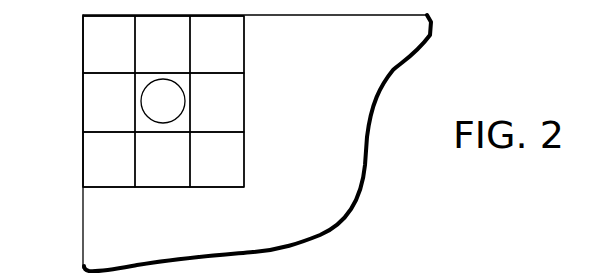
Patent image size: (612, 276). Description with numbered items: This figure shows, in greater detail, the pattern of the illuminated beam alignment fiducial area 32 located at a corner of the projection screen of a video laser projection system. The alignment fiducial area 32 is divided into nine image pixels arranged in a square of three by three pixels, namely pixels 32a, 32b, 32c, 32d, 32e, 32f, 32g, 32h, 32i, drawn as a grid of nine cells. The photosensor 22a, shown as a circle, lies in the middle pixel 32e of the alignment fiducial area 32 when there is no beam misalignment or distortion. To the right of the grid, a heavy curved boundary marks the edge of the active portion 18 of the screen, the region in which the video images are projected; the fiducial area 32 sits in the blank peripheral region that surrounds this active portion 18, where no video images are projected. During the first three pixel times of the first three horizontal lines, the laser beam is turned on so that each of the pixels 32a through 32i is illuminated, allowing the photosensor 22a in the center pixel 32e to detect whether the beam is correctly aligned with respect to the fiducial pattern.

The active portion 18 is at (345, 110).
The photosensor 22a is at (152, 101).
The alignment fiducial area 32 is at (147, 101).
The pixel 32a is at (123, 52).
The pixel 32b is at (177, 52).
The pixel 32c is at (230, 52).
The pixel 32d is at (125, 120).
The middle pixel 32e is at (186, 78).
The pixel 32f is at (230, 120).
The pixel 32g is at (125, 167).
The pixel 32h is at (182, 167).
The pixel 32i is at (233, 167).